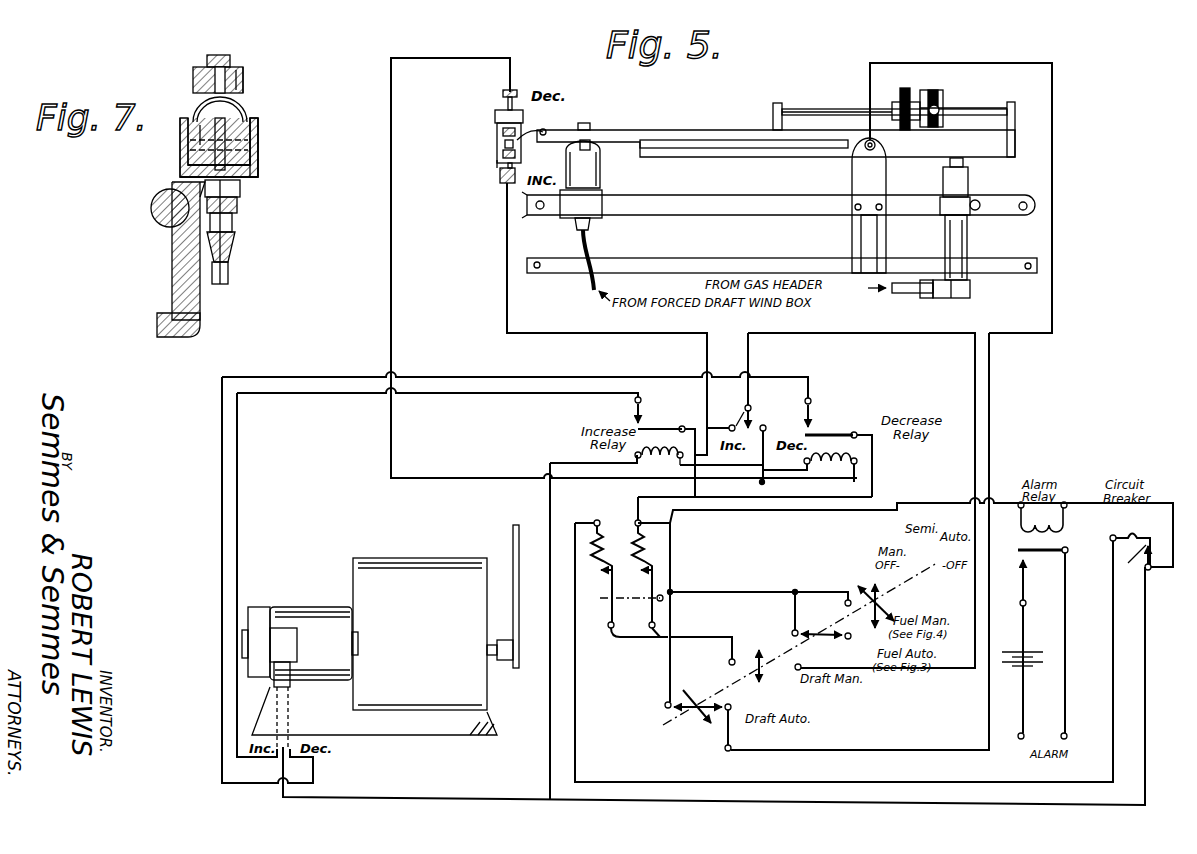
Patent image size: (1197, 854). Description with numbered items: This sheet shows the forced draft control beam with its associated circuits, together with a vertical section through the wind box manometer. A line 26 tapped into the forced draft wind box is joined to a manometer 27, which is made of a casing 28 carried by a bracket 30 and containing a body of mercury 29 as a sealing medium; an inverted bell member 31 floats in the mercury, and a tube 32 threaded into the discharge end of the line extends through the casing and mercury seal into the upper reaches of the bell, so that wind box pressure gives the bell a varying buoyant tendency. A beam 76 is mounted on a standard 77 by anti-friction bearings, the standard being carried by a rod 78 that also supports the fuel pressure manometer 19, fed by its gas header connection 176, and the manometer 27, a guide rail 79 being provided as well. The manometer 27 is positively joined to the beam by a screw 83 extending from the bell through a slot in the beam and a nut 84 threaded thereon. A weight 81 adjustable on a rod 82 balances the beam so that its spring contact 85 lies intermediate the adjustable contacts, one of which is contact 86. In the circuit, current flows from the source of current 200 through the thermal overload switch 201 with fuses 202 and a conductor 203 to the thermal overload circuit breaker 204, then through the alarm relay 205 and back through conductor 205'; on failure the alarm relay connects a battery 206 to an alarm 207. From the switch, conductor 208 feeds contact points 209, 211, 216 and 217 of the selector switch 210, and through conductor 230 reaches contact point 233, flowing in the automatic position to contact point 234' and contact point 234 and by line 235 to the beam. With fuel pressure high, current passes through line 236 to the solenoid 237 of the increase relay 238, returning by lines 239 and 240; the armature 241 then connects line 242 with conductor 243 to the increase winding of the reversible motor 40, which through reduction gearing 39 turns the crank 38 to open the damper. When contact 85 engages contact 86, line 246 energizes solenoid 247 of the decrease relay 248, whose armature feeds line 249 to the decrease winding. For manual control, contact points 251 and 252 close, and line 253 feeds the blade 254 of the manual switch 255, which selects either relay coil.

In FIG. 7, the nut 84 is at (213, 57).
In FIG. 7, the screw 83 is at (236, 69).
In FIG. 7, the beam 76 is at (243, 82).
In FIG. 5, the beam 76 is at (706, 131).
In FIG. 7, the inverted bell member 31 is at (245, 110).
In FIG. 7, the tube 32 is at (225, 130).
In FIG. 7, the casing 28 is at (258, 143).
In FIG. 7, the body of mercury 29 is at (258, 167).
In FIG. 7, the manometer 27 is at (180, 155).
In FIG. 5, the manometer 27 is at (600, 162).
In FIG. 7, the rod 78 is at (151, 208).
In FIG. 5, the rod 78 is at (745, 197).
In FIG. 7, the bracket 30 is at (172, 288).
In FIG. 7, the guide rail 79 is at (160, 317).
In FIG. 5, the guide rail 79 is at (731, 258).
In FIG. 7, the line 26 is at (229, 276).
In FIG. 5, the line 26 is at (581, 243).
In FIG. 5, the adjustable contact 86 is at (525, 127).
In FIG. 5, the spring contact 85 is at (547, 130).
In FIG. 5, the weight 81 is at (941, 100).
In FIG. 5, the rod 82 is at (975, 115).
In FIG. 5, the standard 77 is at (882, 165).
In FIG. 5, the fuel pressure manometer 19 is at (968, 183).
In FIG. 5, the pipe 176 is at (910, 296).
In FIG. 5, the line 246 is at (391, 208).
In FIG. 5, the line 236 is at (507, 263).
In FIG. 5, the line 253 is at (822, 329).
In FIG. 5, the conductor 243 is at (521, 395).
In FIG. 5, the line 249 is at (778, 386).
In FIG. 5, the armature 241 is at (634, 428).
In FIG. 5, the increase relay 238 is at (677, 427).
In FIG. 5, the manual switch 255 is at (729, 417).
In FIG. 5, the blade 254 is at (772, 442).
In FIG. 5, the decrease relay 248 is at (838, 428).
In FIG. 5, the solenoid 237 is at (636, 453).
In FIG. 5, the solenoid 247 is at (857, 457).
In FIG. 5, the line 239 is at (590, 463).
In FIG. 5, the line 242 is at (696, 484).
In FIG. 5, the line 240 is at (548, 486).
In FIG. 5, the conductor 203 is at (596, 520).
In FIG. 5, the fuses 202 is at (621, 548).
In FIG. 5, the thermal overload switch 201 is at (634, 603).
In FIG. 5, the source of current 200 is at (624, 576).
In FIG. 5, the conductor 208 is at (672, 562).
In FIG. 5, the conductor 205' is at (921, 532).
In FIG. 5, the contact point 216 is at (805, 639).
In FIG. 5, the contact point 217 is at (910, 605).
In FIG. 5, the contact point 209 is at (788, 636).
In FIG. 5, the contact point 211 is at (851, 639).
In FIG. 5, the contact point 252 is at (816, 658).
In FIG. 5, the contact point 251 is at (728, 663).
In FIG. 5, the conductor 230 is at (668, 673).
In FIG. 5, the contact point 233 is at (664, 707).
In FIG. 5, the selector switch 210 is at (667, 720).
In FIG. 5, the contact point 234' is at (760, 702).
In FIG. 5, the contact point 234 is at (748, 741).
In FIG. 5, the line 235 is at (886, 750).
In FIG. 5, the alarm relay 205 is at (1067, 620).
In FIG. 5, the thermal overload circuit breaker 204 is at (1133, 559).
In FIG. 5, the battery 206 is at (1012, 652).
In FIG. 5, the alarm 207 is at (1020, 739).
In FIG. 5, the crank 38 is at (512, 541).
In FIG. 5, the reduction gearing 39 is at (395, 573).
In FIG. 5, the reversible motor 40 is at (305, 618).